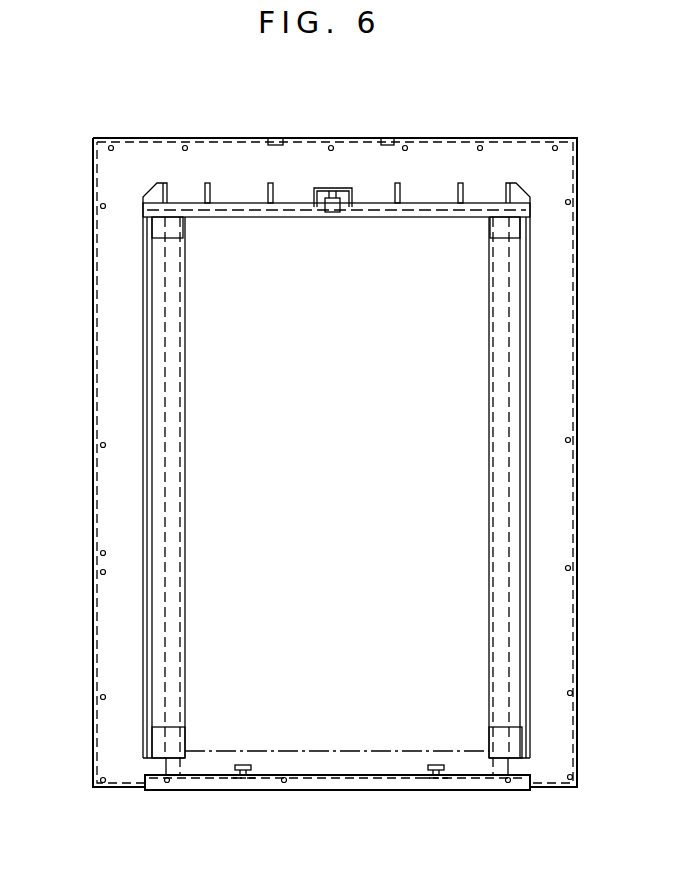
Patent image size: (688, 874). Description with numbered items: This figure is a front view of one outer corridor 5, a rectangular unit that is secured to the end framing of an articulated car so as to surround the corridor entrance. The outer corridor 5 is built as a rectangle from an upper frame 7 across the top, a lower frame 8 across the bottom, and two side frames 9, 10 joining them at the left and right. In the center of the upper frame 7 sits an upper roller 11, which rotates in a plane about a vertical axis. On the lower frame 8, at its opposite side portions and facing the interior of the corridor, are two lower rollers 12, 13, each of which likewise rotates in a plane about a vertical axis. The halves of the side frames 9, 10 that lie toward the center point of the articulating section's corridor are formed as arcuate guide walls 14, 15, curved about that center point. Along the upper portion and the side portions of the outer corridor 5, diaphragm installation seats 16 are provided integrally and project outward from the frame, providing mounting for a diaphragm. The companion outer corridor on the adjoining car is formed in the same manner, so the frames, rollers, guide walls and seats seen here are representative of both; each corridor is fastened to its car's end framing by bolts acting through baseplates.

The outer corridor 5 is at (527, 132).
The upper frame 7 is at (372, 210).
The lower frame 8 is at (355, 790).
The side frame 9 is at (180, 403).
The side frame 10 is at (495, 396).
The upper roller 11 is at (333, 213).
The lower roller 12 is at (243, 765).
The lower roller 13 is at (436, 765).
The arcuate guide wall 14 is at (172, 487).
The arcuate guide wall 15 is at (497, 477).
The diaphragm installation seat 16 is at (446, 160).